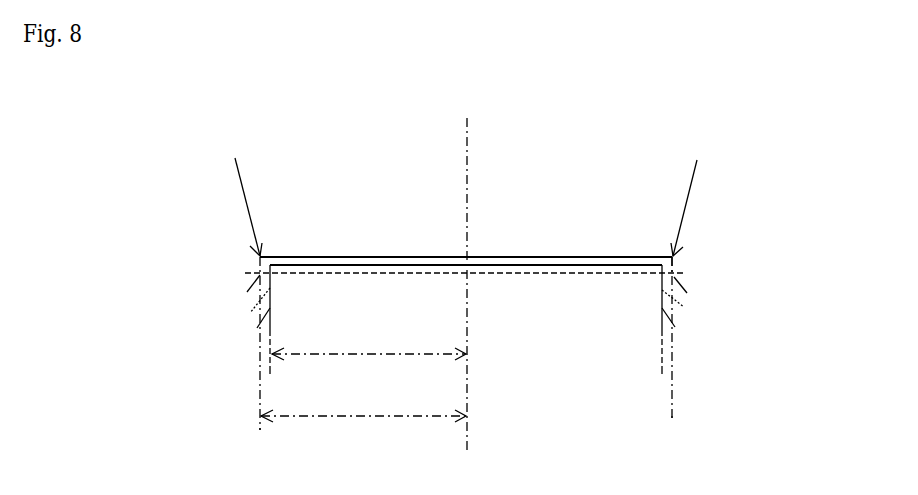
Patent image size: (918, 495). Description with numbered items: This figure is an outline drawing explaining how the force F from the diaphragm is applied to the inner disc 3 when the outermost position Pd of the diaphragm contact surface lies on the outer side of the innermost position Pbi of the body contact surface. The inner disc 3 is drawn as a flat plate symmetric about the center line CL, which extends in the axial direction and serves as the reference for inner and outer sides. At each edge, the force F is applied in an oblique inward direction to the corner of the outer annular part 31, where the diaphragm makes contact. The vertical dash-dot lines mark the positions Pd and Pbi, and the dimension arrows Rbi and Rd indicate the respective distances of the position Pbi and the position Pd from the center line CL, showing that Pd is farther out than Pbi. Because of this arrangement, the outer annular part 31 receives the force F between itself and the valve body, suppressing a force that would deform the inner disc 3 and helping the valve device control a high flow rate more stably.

The inner disc 3 is at (485, 184).
The outer annular part 31 is at (676, 258).
The center line CL is at (470, 271).
The force F is at (467, 207).
The inner bend radius dimension Rbi is at (369, 345).
The outer dimension to center line Rd is at (363, 406).
The innermost position of the body contact surface Pbi is at (465, 388).
The outermost position of the diaphragm contact surface Pd is at (465, 436).